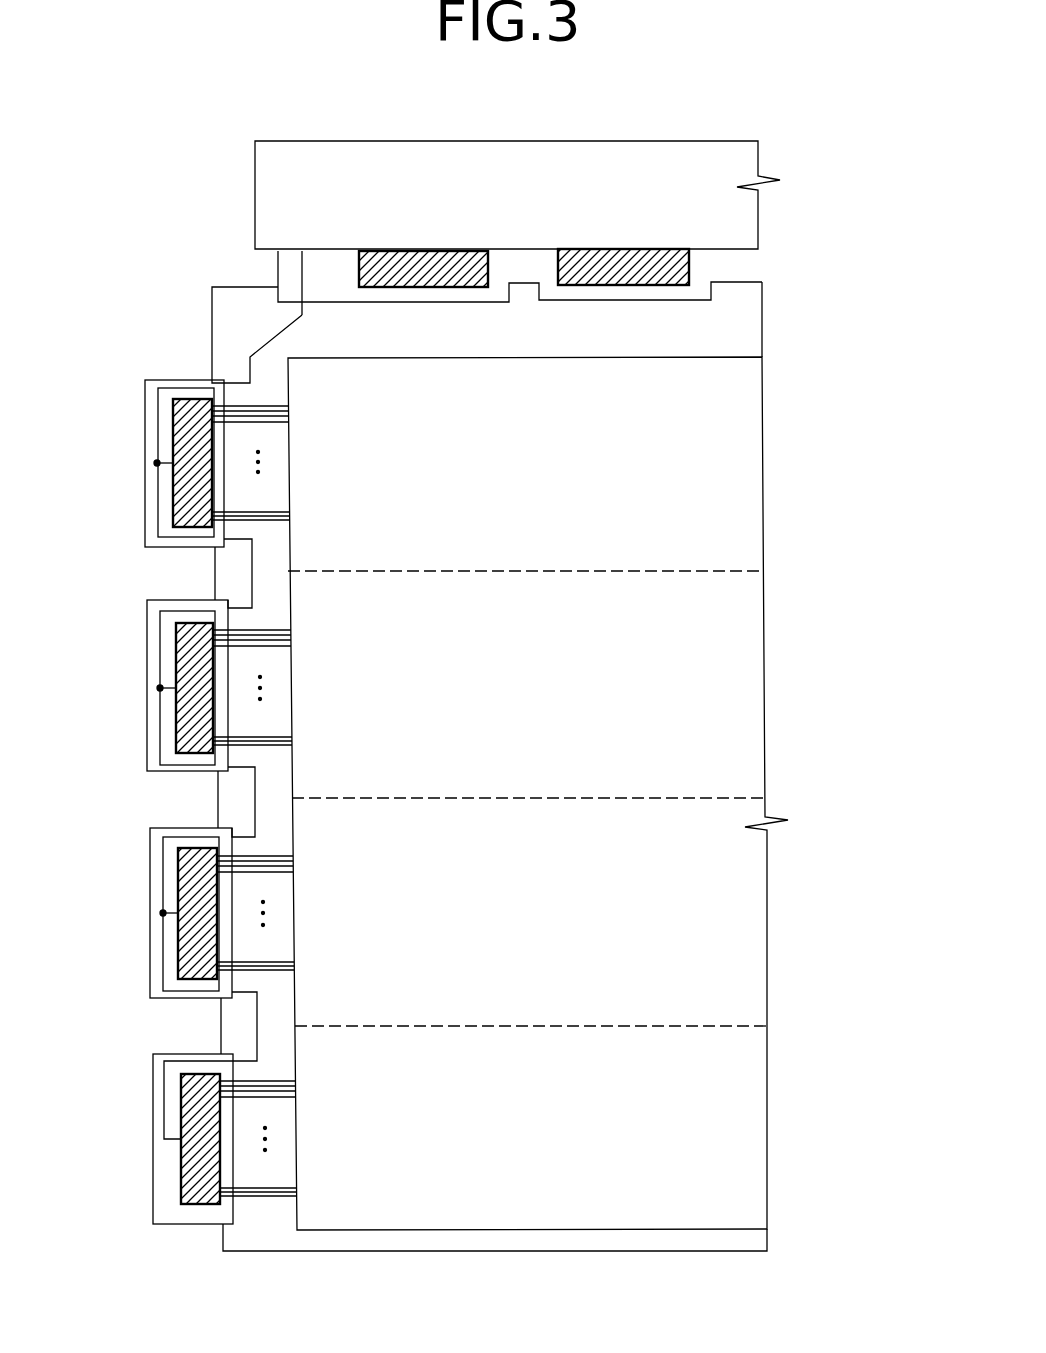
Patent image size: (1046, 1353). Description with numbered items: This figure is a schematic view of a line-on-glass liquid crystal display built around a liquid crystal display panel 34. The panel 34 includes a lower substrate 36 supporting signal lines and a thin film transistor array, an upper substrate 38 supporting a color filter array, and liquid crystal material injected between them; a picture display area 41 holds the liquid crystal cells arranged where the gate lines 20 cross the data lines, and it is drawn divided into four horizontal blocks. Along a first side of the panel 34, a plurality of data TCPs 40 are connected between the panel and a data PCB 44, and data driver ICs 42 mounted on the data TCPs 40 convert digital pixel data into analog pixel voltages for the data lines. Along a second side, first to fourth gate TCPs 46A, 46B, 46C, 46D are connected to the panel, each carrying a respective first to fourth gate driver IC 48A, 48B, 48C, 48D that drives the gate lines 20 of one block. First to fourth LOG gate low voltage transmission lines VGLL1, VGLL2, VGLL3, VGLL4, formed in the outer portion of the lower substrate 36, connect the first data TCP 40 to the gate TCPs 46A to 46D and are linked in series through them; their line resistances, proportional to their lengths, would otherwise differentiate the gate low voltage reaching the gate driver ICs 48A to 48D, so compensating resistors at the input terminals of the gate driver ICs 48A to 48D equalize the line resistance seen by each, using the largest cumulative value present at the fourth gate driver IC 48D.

The gate lines 20 is at (280, 404).
The liquid crystal display panel 34 is at (815, 743).
The lower substrate 36 is at (750, 339).
The upper substrate 38 is at (745, 401).
The data TCPs 40 is at (711, 258).
The picture display area 41 is at (557, 645).
The data driver ICs 42 is at (578, 248).
The data PCB 44 is at (695, 148).
The first gate TCP 46A is at (145, 429).
The second gate TCP 46B is at (147, 653).
The third gate TCP 46C is at (150, 874).
The fourth gate TCP 46D is at (153, 1099).
The first gate driver IC 48A is at (180, 498).
The second gate driver IC 48B is at (183, 724).
The third gate driver IC 48C is at (185, 950).
The fourth gate driver IC 48D is at (181, 1175).
The first LOG gate low voltage transmission line VGLL1 is at (275, 335).
The second LOG gate low voltage transmission line VGLL2 is at (250, 557).
The third LOG gate low voltage transmission line VGLL3 is at (250, 783).
The fourth LOG gate low voltage transmission line VGLL4 is at (255, 1008).